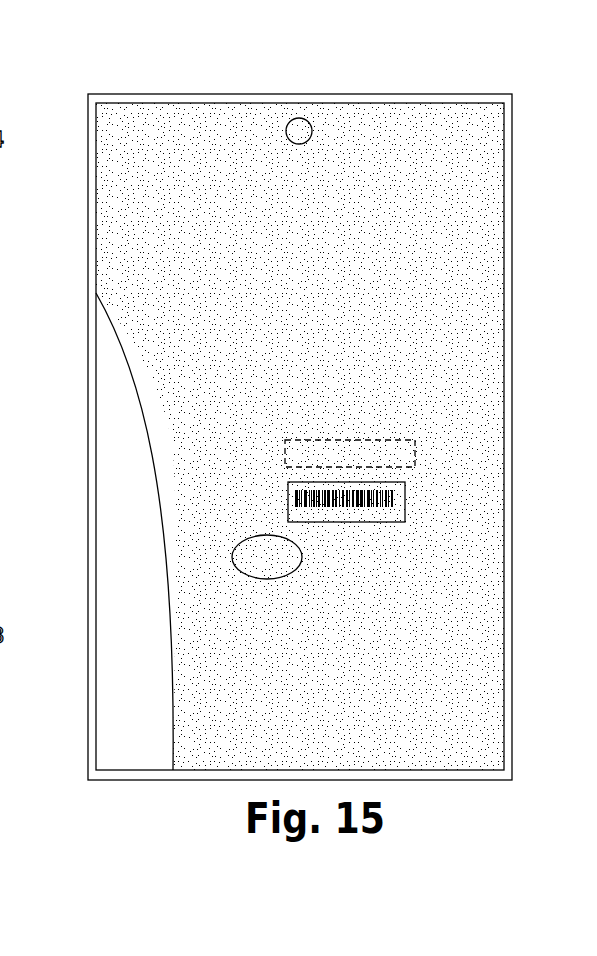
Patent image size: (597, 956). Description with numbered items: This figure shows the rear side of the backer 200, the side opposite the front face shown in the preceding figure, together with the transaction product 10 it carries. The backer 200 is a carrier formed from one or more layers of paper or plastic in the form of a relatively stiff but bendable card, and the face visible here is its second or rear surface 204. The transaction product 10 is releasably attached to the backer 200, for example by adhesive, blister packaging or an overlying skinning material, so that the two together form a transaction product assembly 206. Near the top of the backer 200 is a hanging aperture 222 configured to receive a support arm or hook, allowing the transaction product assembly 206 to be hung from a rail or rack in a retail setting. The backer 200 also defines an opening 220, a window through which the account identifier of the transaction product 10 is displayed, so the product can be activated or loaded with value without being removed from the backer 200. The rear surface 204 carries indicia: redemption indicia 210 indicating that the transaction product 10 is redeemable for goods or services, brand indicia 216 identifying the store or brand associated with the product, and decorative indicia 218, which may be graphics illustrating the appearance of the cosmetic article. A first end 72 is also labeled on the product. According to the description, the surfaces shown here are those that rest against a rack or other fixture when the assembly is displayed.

The backer 200 is at (113, 93).
The rear surface 204 is at (108, 186).
The transaction product assembly 206 is at (181, 70).
The decorative indicia 218 is at (139, 262).
The hanging aperture 222 is at (291, 128).
The redemption indicia 210 is at (425, 446).
The transaction product 10 is at (404, 484).
The opening 220 is at (400, 503).
The first end 72 is at (377, 523).
The brand indicia 216 is at (228, 556).